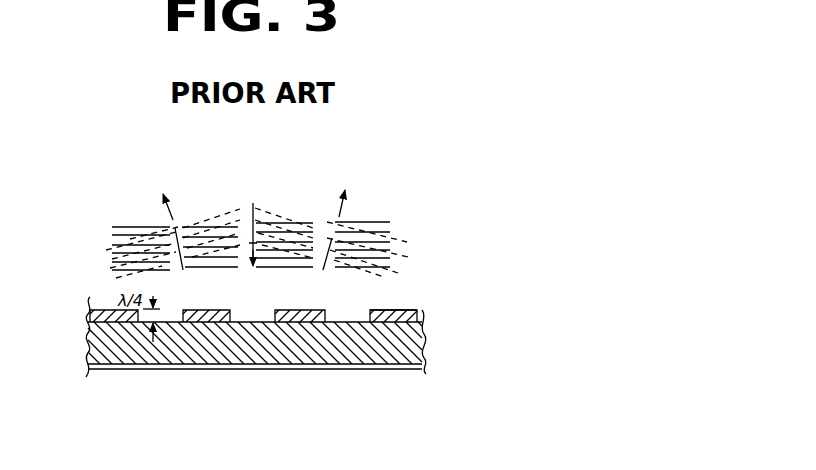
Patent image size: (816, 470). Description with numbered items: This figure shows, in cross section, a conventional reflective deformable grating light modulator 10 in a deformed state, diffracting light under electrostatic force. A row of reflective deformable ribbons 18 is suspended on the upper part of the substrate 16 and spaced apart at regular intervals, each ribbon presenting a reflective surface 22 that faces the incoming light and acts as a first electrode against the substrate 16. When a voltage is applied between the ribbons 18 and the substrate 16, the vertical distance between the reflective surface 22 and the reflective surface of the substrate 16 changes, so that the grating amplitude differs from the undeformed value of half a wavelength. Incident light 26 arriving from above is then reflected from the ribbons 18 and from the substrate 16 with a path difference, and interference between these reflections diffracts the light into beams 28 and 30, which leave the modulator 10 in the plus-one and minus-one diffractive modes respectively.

The reflective deformable grating light modulator 10 is at (76, 309).
The substrate 16 is at (423, 328).
The reflective deformable ribbons 18 is at (418, 315).
The reflective surface 22 is at (392, 304).
The incident light 26 is at (424, 229).
The light beam diffracted in +1 diffractive mode 28 is at (170, 214).
The light beam diffracted in −1 diffractive mode 30 is at (345, 203).